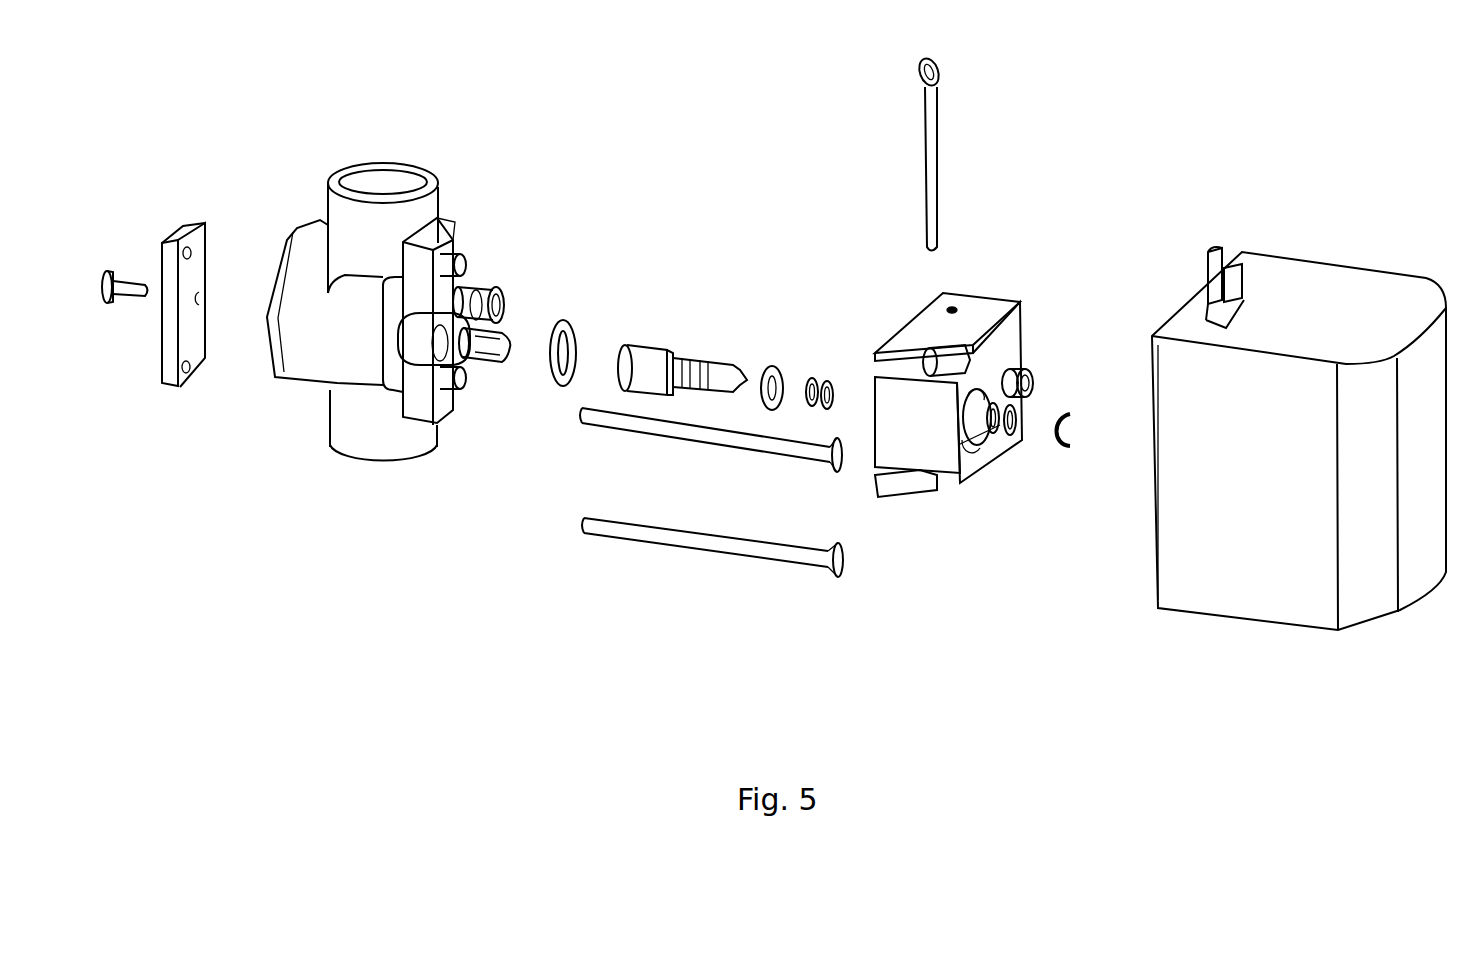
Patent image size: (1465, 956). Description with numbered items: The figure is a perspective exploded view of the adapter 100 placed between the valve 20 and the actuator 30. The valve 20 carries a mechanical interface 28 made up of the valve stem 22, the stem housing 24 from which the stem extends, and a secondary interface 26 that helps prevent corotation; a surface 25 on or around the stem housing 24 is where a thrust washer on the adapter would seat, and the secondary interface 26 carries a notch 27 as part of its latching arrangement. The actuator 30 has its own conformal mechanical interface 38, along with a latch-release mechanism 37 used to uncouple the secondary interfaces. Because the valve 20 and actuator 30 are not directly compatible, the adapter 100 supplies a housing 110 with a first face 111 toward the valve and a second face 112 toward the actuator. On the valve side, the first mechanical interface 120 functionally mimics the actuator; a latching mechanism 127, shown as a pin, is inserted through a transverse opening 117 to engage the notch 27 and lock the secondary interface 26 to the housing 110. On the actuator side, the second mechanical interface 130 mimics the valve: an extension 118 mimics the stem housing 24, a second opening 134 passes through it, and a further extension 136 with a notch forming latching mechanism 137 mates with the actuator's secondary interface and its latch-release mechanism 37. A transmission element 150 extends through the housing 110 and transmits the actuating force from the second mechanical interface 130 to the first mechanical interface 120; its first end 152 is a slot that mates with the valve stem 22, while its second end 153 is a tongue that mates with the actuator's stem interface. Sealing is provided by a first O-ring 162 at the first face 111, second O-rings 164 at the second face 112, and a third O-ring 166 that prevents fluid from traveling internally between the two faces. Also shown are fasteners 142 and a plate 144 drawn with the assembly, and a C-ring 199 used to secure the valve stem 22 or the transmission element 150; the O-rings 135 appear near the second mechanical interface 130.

The adapter 100 is at (870, 603).
The valve 20 is at (347, 358).
The valve stem 22 is at (495, 368).
The stem housing 24 is at (443, 348).
The corresponding surface 25 is at (433, 368).
The secondary interface 26 is at (503, 293).
The notch 27 is at (490, 287).
The mechanical interface 28 is at (487, 255).
The actuator 30 is at (1229, 367).
The latch-release mechanism 37 is at (1206, 250).
The mechanical interface 38 is at (1157, 322).
The housing 110 is at (889, 338).
The first face 111 is at (877, 333).
The second face 112 is at (1005, 347).
The opening 117 is at (940, 296).
The extension 118 is at (972, 427).
The first mechanical interface 120 is at (858, 377).
The latching mechanism 127 is at (923, 168).
The second mechanical interface 130 is at (1007, 477).
The second opening 134 is at (990, 450).
The O-rings 135 is at (1005, 433).
The extension 136 is at (1038, 383).
The latching mechanism 137 is at (1027, 367).
The screws 142 is at (657, 550).
The mounting plate 144 is at (172, 338).
The transmission element 150 is at (680, 314).
The first end 152 is at (650, 340).
The second end 153 is at (710, 351).
The first O-ring 162 is at (565, 320).
The second O-ring 164 is at (805, 408).
The third O-ring 166 is at (763, 357).
The C-ring 199 is at (1078, 437).